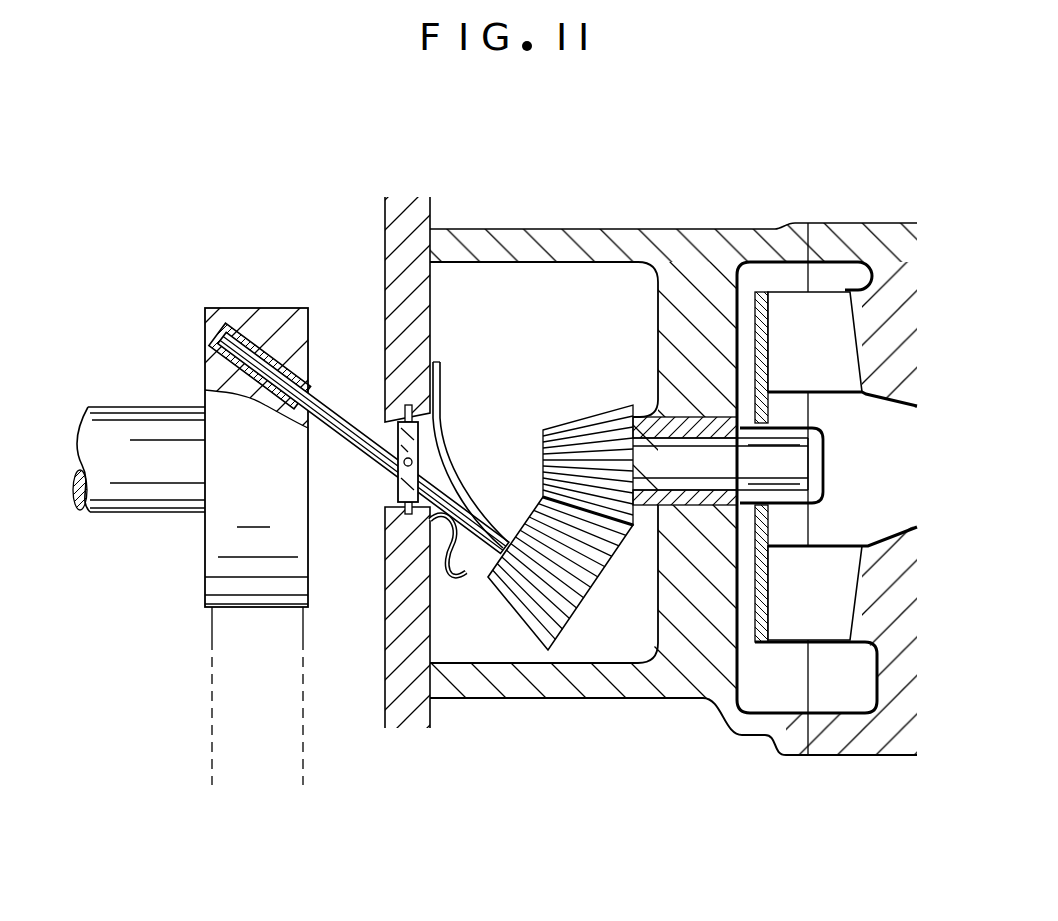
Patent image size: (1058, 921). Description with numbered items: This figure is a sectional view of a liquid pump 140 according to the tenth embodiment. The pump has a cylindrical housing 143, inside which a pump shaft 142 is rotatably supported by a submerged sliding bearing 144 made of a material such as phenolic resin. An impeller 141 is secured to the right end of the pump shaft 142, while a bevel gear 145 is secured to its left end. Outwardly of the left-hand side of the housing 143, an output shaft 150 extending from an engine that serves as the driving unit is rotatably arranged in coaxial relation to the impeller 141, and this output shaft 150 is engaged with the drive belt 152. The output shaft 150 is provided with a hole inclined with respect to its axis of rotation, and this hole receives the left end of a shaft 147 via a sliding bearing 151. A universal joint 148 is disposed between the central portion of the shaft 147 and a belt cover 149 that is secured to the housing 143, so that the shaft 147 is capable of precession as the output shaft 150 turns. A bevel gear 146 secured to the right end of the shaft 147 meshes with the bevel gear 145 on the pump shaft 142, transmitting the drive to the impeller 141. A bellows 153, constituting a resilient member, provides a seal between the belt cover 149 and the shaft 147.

The liquid pump 140 is at (256, 253).
The impeller 141 is at (822, 315).
The pump shaft 142 is at (695, 456).
The housing 143 is at (711, 287).
The submerged sliding bearing 144 is at (699, 503).
The bevel gear 145 is at (583, 422).
The bevel gear 146 is at (537, 636).
The shaft 147 is at (344, 418).
The universal joint 148 is at (397, 490).
The belt cover 149 is at (403, 292).
The output shaft 150 is at (141, 490).
The sleeve 151 is at (226, 388).
The drive belt 152 is at (252, 705).
The bellows 153 is at (448, 437).